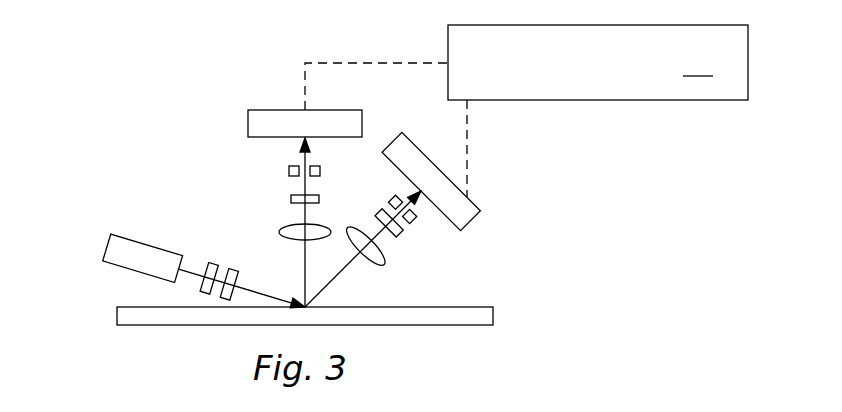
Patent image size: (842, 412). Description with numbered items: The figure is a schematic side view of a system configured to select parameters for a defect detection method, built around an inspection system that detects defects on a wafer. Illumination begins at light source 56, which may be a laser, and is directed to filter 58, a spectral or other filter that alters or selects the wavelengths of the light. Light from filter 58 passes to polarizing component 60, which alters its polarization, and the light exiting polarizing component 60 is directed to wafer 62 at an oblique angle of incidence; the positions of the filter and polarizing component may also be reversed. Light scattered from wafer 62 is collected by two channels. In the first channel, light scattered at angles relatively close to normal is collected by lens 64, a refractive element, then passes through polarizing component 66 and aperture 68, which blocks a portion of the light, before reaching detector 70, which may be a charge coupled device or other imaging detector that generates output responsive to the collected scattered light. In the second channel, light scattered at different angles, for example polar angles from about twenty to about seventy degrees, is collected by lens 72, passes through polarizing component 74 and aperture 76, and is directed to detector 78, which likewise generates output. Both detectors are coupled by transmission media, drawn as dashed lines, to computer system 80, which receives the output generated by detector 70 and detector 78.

The light source 56 is at (137, 239).
The filter 58 is at (216, 262).
The polarizing component 60 is at (229, 270).
The wafer 62 is at (128, 305).
The lens 64 is at (283, 226).
The polarizing component 66 is at (291, 197).
The aperture 68 is at (290, 168).
The detector 70 is at (248, 127).
The lens 72 is at (388, 265).
The polarizing component 74 is at (402, 232).
The aperture 76 is at (395, 197).
The detector 78 is at (473, 220).
The computer system 80 is at (526, 111).